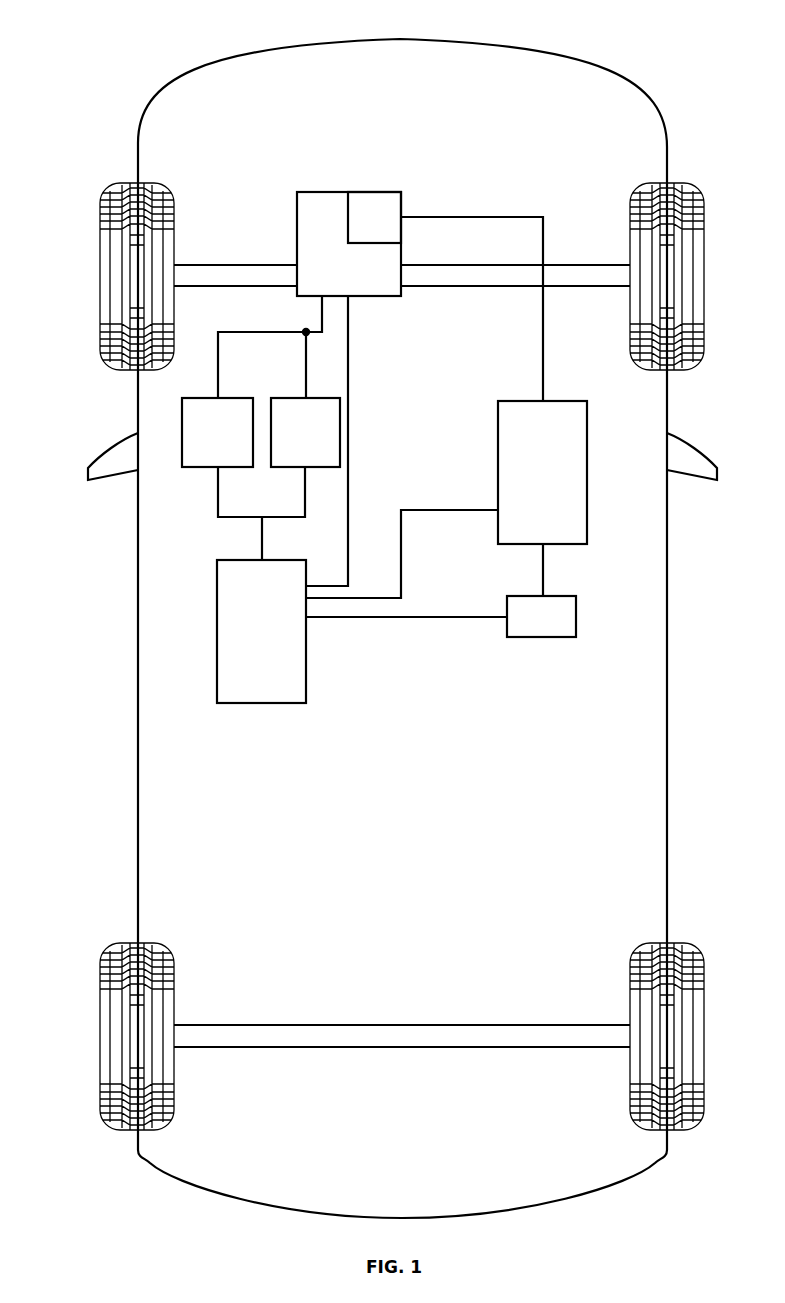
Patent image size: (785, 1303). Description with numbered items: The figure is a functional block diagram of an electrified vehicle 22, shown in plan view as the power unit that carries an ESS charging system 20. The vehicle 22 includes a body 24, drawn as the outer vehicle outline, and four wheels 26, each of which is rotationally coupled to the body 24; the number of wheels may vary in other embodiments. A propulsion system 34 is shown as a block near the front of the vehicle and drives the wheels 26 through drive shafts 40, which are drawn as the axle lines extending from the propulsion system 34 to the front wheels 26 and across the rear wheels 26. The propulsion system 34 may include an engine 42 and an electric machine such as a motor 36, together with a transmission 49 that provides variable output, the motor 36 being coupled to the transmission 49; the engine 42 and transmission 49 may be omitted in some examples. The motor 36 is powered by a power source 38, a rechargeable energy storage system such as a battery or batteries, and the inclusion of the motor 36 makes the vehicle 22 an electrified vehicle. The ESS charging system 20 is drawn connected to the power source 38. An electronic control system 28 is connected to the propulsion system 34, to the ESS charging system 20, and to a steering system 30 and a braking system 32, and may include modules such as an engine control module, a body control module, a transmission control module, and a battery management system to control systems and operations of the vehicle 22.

The ESS charging system 20 is at (547, 648).
The vehicle 22 is at (636, 60).
The body 24 is at (137, 705).
The wheels 26 is at (99, 276).
The electronic control system 28 is at (271, 641).
The steering system 30 is at (228, 445).
The braking system 32 is at (316, 445).
The propulsion system 34 is at (311, 180).
The motor 36 is at (385, 228).
The power source 38 is at (553, 482).
The drive shafts 40 is at (237, 264).
The engine 42 is at (302, 226).
The transmission 49 is at (314, 274).